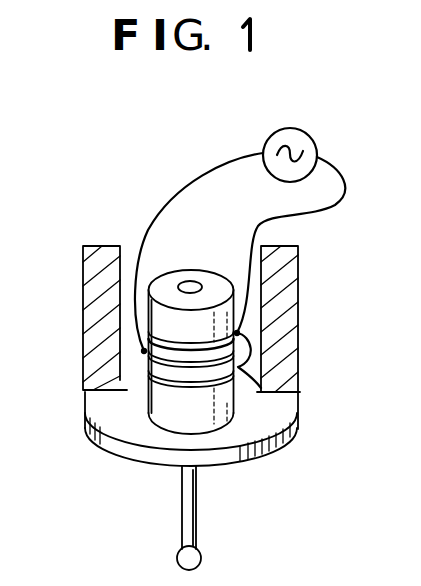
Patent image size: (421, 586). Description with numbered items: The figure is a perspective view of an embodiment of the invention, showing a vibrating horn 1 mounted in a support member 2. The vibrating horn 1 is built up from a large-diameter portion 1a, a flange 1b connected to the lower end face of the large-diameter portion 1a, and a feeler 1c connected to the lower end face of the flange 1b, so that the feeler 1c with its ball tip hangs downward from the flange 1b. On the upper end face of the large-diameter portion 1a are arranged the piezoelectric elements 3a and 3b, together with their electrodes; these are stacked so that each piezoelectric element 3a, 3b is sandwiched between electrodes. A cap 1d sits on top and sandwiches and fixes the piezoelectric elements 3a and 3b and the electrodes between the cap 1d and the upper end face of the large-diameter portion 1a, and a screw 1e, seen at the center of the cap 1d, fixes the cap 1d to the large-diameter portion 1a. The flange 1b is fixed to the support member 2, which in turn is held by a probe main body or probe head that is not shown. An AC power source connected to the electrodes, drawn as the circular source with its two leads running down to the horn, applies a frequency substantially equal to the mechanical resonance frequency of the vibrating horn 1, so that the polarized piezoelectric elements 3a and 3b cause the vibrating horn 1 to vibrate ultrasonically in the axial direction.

The vibrating horn 1 is at (212, 256).
The large-diameter portion 1a is at (150, 362).
The flange 1b is at (297, 428).
The feeler 1c is at (197, 518).
The cap 1d is at (152, 319).
The screw 1e is at (189, 283).
The support member 2 is at (282, 264).
The piezoelectric element 3a is at (212, 378).
The piezoelectric element 3b is at (175, 380).